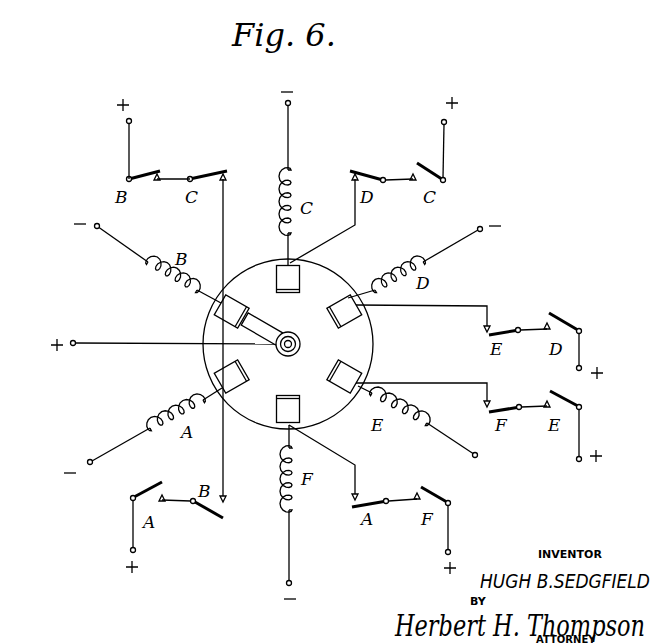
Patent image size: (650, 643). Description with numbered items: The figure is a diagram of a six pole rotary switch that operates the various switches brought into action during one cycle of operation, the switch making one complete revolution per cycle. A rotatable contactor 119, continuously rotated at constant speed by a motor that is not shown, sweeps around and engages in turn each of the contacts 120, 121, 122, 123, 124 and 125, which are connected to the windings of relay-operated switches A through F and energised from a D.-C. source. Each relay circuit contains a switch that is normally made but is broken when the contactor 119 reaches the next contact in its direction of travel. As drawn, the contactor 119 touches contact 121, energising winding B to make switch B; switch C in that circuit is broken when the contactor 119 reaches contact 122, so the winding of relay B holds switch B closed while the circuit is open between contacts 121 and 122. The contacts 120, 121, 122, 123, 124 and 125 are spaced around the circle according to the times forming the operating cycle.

The rotatable contactor 119 is at (269, 318).
The contact 120 is at (227, 373).
The contact 121 is at (222, 310).
The contact 122 is at (281, 264).
The contact 123 is at (337, 300).
The contact 124 is at (345, 372).
The contact 125 is at (282, 412).